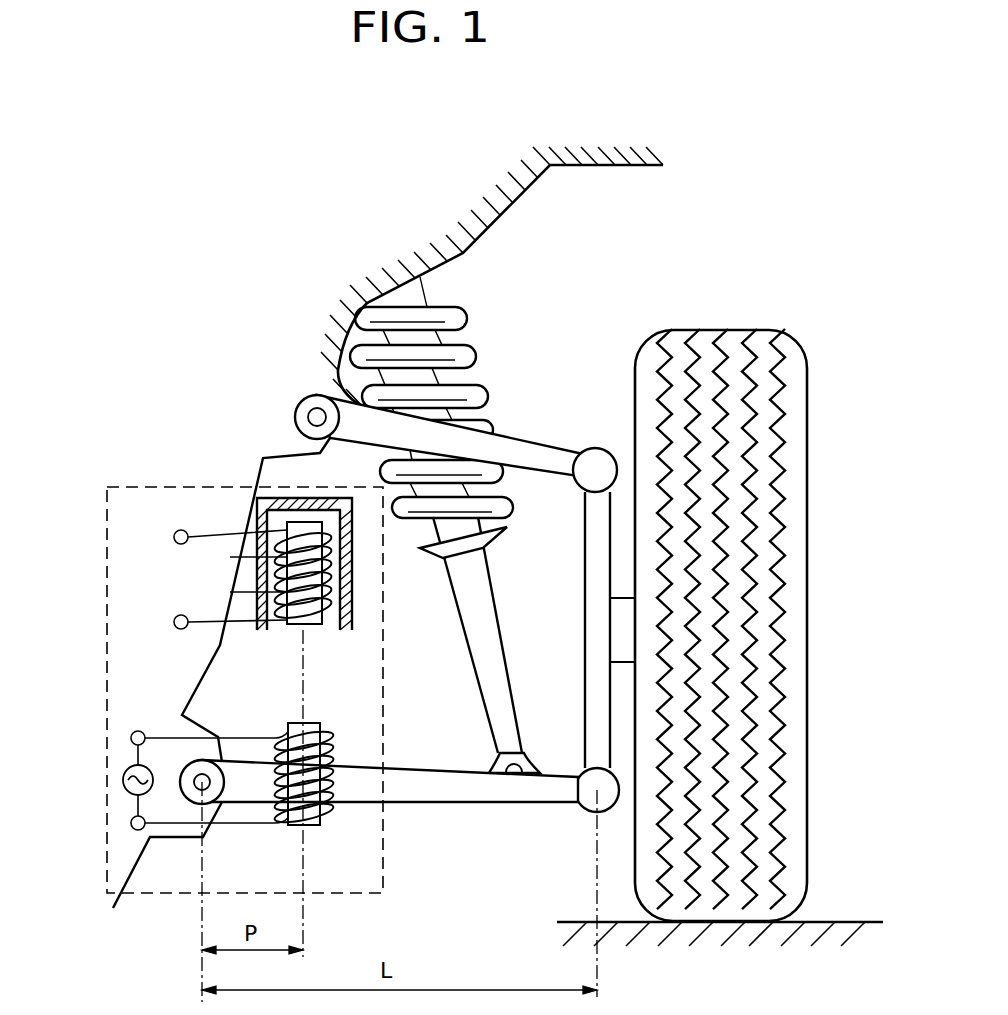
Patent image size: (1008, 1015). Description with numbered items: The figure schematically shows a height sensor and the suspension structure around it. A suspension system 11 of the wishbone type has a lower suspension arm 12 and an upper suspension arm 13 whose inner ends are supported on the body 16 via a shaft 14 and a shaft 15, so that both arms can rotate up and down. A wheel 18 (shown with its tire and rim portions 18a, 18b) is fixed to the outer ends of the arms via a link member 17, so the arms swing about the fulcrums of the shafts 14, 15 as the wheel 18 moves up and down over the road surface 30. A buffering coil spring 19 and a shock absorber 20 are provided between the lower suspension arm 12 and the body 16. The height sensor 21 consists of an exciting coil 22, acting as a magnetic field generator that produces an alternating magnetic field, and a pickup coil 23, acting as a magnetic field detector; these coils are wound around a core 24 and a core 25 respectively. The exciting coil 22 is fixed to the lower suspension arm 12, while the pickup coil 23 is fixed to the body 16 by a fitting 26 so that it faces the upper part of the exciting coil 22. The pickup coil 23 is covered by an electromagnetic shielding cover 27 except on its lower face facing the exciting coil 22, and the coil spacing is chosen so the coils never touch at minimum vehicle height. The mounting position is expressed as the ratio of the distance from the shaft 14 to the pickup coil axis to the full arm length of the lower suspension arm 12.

The suspension system 11 is at (515, 804).
The lower suspension arm 12 is at (418, 797).
The upper suspension arm 13 is at (525, 445).
The shaft 14 is at (195, 778).
The shaft 15 is at (312, 413).
The body 16 is at (497, 192).
The link member 17 is at (585, 565).
The wheel 18 is at (731, 583).
The tire 18a is at (721, 625).
The wheel rim 18b is at (683, 330).
The buffering coil spring 19 is at (476, 356).
The shock absorber 20 is at (477, 648).
The height sensor 21 is at (172, 895).
The exciting coil 22 is at (327, 813).
The pickup coil 23 is at (247, 528).
The core 24 is at (317, 722).
The core 25 is at (300, 517).
The fitting 26 is at (240, 573).
The electromagnetic shielding cover 27 is at (352, 580).
The road surface 30 is at (833, 922).